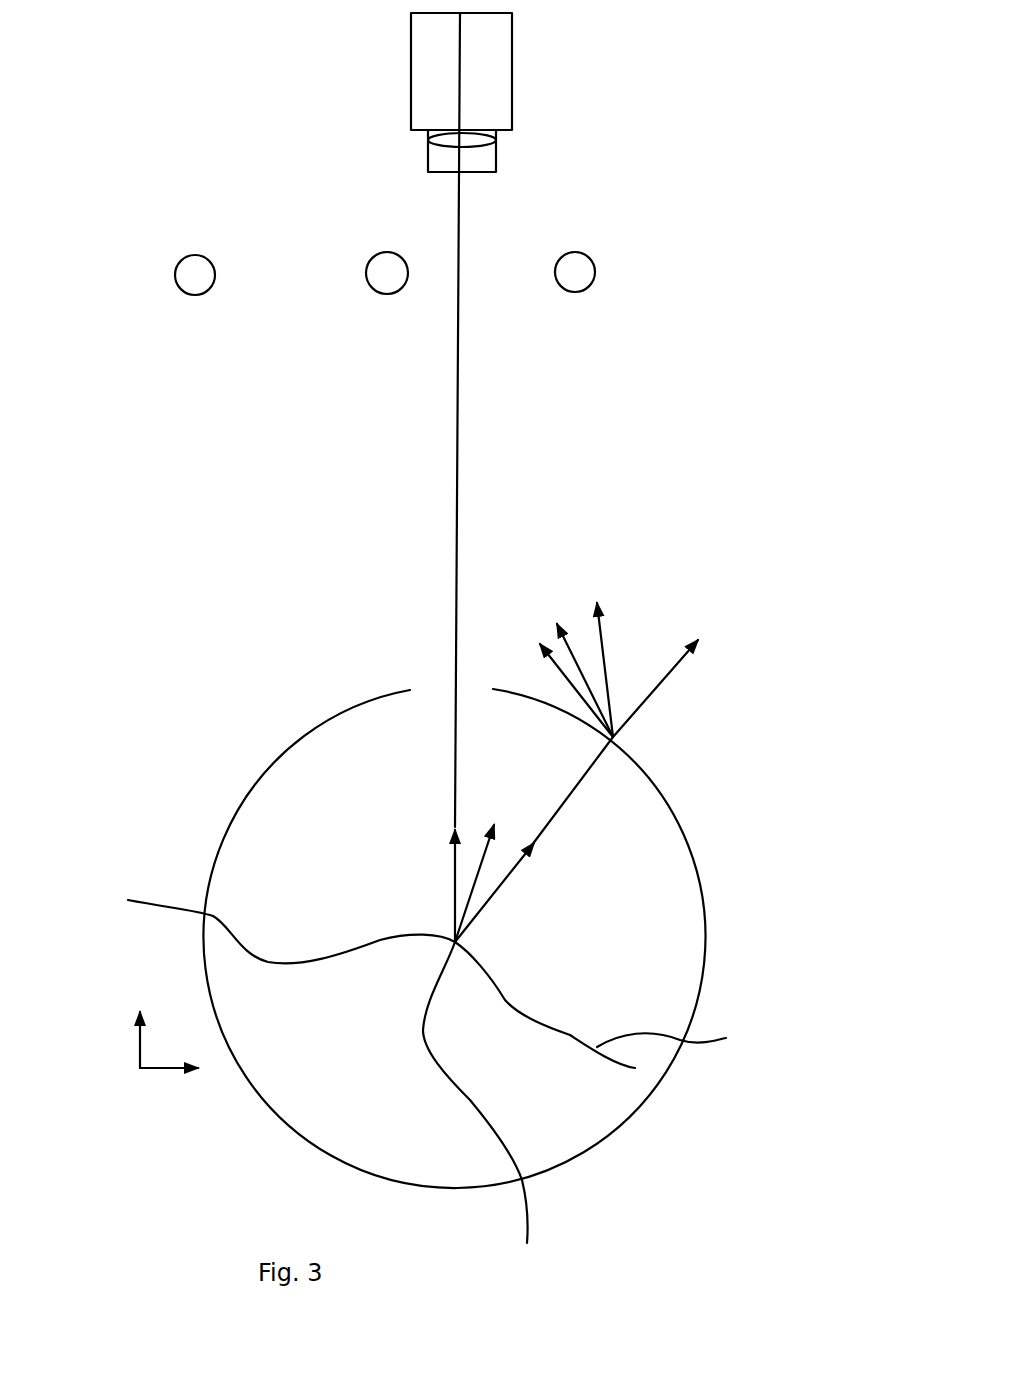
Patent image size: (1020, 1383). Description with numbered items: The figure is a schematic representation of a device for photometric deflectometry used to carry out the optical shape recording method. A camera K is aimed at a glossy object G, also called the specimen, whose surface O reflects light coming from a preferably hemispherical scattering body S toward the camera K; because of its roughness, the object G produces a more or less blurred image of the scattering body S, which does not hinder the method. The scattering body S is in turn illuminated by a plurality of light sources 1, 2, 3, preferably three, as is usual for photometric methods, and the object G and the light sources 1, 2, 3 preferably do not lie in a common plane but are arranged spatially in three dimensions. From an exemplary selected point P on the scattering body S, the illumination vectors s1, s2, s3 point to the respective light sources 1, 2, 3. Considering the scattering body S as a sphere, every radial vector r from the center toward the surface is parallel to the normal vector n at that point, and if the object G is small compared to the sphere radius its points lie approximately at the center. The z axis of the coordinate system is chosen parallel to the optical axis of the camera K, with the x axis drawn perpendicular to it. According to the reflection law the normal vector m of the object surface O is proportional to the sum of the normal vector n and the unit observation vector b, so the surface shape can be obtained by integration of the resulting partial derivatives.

The camera K is at (512, 97).
The light source 1 is at (213, 258).
The light source 2 is at (400, 256).
The light source 3 is at (591, 258).
The scattering body S is at (685, 838).
The glossy object G is at (148, 895).
The object surface O is at (672, 1037).
The point of the scattering body P is at (476, 1120).
The unit vector in the direction of observation b is at (436, 477).
The normal vector of the object surface m is at (481, 869).
The radial vector r is at (534, 839).
The normal vector of the scattering body n is at (655, 688).
The illumination vector s1 is at (550, 677).
The illumination vector s2 is at (571, 656).
The illumination vector s3 is at (601, 646).
The z axis z is at (152, 1025).
The x axis x is at (185, 1074).